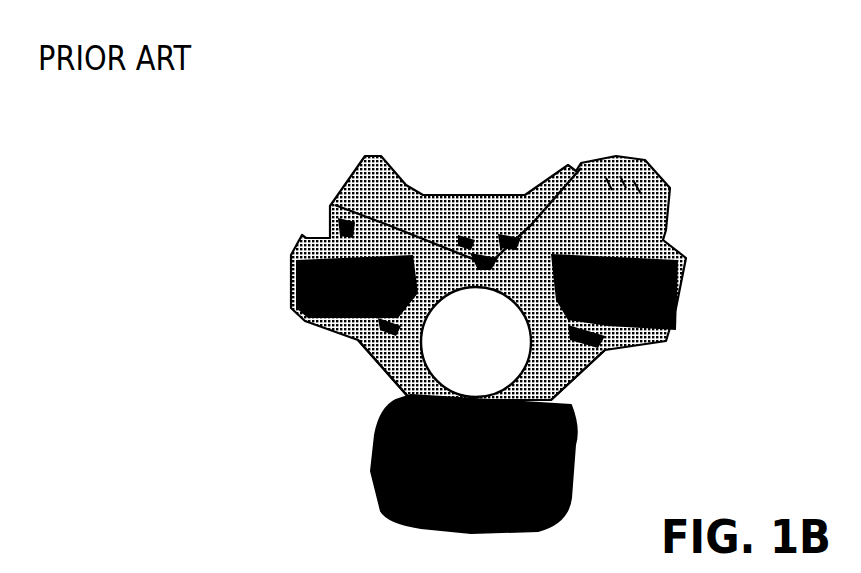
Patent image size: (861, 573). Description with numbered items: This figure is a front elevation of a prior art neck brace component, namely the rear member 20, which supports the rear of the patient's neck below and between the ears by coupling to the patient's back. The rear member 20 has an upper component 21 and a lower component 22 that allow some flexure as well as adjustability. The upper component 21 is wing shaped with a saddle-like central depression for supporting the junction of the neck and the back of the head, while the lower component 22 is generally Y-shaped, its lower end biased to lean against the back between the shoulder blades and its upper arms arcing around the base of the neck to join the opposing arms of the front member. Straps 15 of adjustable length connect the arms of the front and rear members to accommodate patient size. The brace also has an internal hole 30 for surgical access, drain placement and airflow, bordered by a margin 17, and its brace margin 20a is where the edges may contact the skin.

The straps 15 is at (272, 290).
The margin of the aperture 17 is at (363, 337).
The rear member 20 is at (293, 200).
The brace margin 20a is at (473, 180).
The upper component 21 is at (495, 185).
The lower component 22 is at (394, 452).
The holes or slots 30 is at (503, 347).